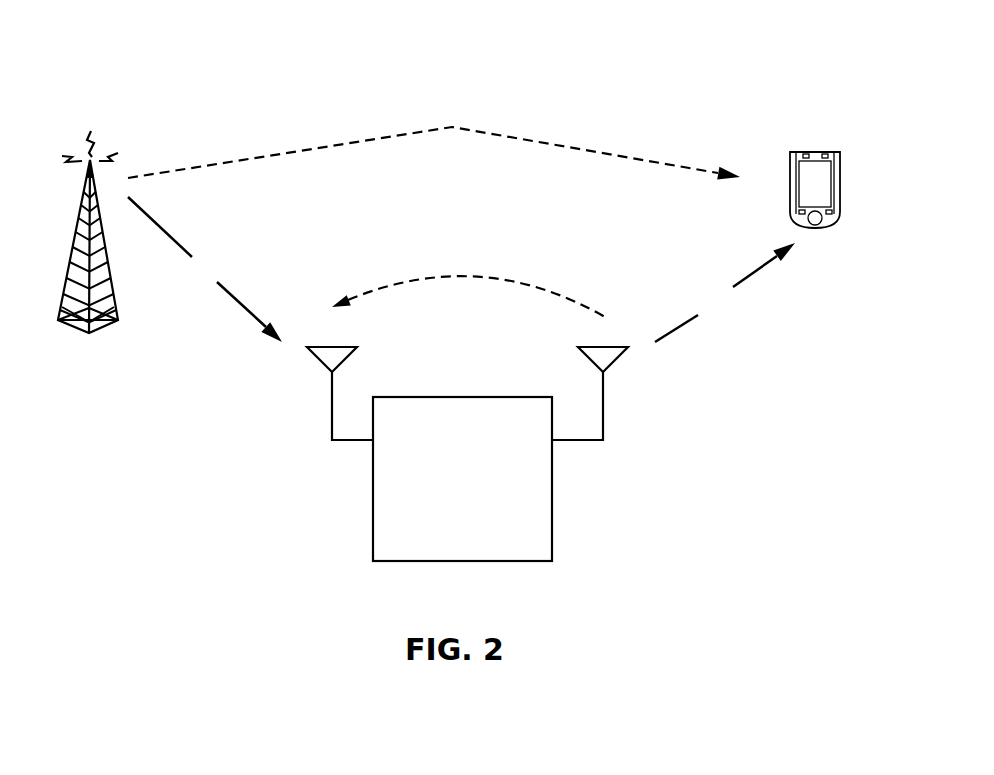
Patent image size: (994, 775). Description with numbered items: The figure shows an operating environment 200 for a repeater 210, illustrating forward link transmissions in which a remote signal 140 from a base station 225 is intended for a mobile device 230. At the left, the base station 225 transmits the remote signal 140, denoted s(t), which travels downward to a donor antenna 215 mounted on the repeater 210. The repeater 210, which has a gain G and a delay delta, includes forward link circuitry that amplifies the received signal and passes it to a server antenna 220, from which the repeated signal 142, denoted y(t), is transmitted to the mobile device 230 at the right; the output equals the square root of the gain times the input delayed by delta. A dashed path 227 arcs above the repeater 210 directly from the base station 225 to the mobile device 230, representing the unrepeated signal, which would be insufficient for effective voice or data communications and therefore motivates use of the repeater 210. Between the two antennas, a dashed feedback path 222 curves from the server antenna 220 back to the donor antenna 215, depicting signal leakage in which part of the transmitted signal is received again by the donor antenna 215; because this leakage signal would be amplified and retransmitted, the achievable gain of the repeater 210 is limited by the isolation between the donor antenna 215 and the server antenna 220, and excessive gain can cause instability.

The operating environment 200 is at (738, 53).
The base station 225 is at (90, 333).
The remote signal 140 is at (168, 233).
The path 227 is at (563, 147).
The mobile device 230 is at (805, 153).
The repeated signal 142 is at (768, 262).
The feedback path 222 is at (498, 273).
The donor antenna 215 is at (348, 353).
The server antenna 220 is at (580, 355).
The repeater 210 is at (483, 562).